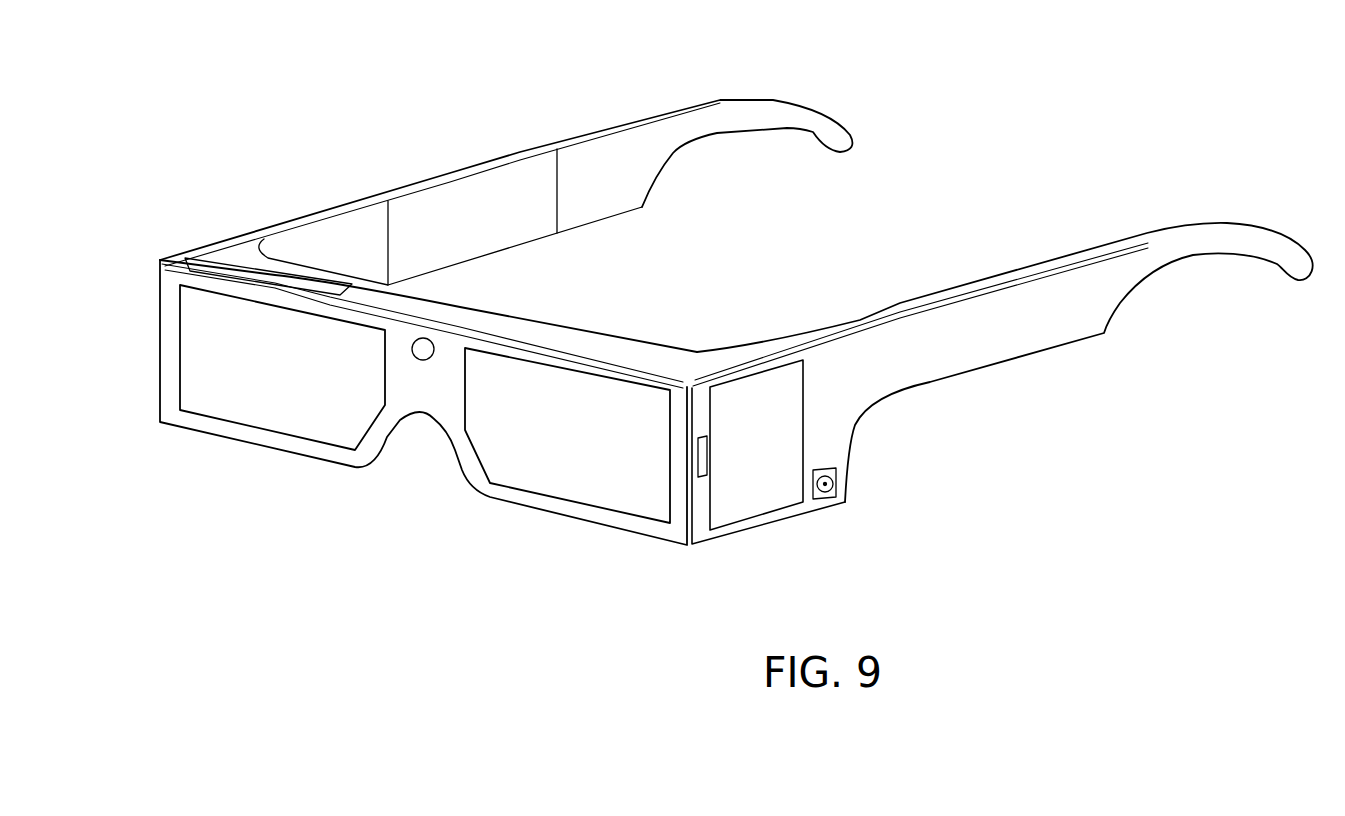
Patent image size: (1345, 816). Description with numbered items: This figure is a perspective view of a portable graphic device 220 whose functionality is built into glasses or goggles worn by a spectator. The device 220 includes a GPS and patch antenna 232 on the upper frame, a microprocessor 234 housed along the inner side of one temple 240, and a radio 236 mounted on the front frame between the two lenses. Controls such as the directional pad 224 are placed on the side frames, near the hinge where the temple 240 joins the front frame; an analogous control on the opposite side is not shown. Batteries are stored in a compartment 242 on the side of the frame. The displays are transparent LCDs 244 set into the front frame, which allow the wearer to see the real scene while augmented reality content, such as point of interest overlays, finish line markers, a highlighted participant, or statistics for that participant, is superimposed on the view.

The graphic device 220 is at (340, 557).
The directional pad 224 is at (838, 483).
The GPS and patch antenna 232 is at (205, 257).
The microprocessor 234 is at (522, 173).
The radio 236 is at (423, 361).
The temple 240 is at (725, 105).
The compartment 242 is at (760, 500).
The transparent LCD displays 244 is at (268, 423).